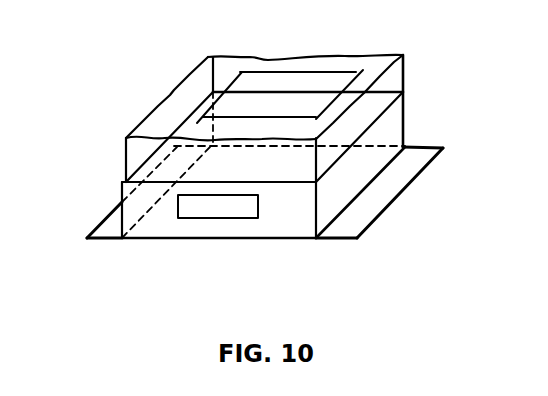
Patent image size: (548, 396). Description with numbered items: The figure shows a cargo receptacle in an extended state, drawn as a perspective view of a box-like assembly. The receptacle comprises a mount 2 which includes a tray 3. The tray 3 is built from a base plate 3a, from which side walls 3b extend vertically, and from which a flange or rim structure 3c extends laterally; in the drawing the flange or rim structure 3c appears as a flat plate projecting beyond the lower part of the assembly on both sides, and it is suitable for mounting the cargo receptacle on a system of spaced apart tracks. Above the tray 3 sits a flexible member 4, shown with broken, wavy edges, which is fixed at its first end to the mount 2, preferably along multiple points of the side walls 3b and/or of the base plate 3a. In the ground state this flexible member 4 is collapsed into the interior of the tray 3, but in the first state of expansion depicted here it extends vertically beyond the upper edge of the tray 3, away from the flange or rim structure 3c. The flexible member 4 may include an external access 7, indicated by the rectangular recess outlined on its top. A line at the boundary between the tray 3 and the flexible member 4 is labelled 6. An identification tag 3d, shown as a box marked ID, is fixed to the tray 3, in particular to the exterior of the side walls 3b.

The mount 2 is at (411, 125).
The tray 3 is at (366, 168).
The base plate 3a is at (253, 241).
The side walls 3b is at (298, 219).
The flange or rim structure 3c is at (379, 197).
The identification tag 3d is at (178, 208).
The flexible member 4 is at (409, 73).
The intermediate member 6 is at (385, 100).
The external access 7 is at (293, 72).